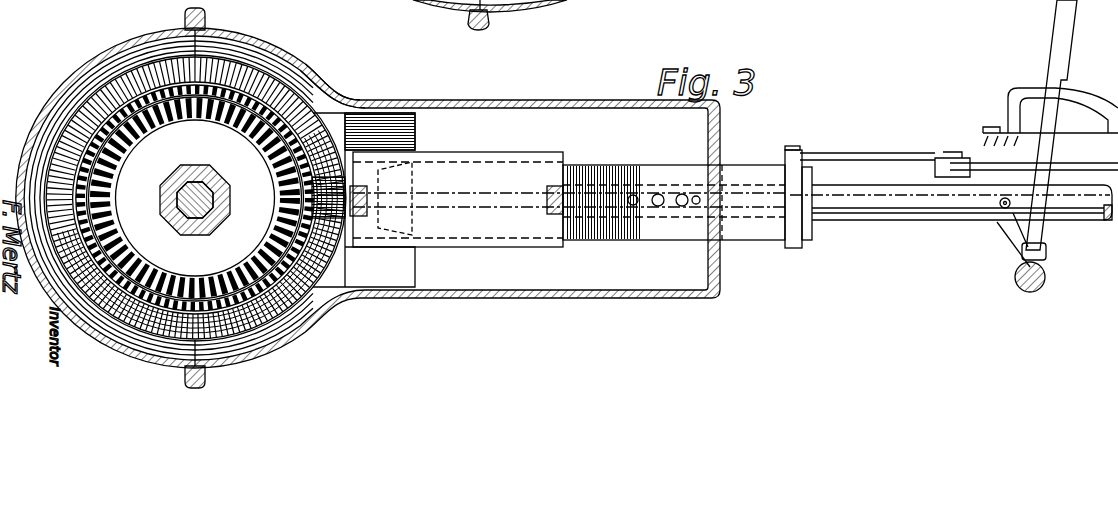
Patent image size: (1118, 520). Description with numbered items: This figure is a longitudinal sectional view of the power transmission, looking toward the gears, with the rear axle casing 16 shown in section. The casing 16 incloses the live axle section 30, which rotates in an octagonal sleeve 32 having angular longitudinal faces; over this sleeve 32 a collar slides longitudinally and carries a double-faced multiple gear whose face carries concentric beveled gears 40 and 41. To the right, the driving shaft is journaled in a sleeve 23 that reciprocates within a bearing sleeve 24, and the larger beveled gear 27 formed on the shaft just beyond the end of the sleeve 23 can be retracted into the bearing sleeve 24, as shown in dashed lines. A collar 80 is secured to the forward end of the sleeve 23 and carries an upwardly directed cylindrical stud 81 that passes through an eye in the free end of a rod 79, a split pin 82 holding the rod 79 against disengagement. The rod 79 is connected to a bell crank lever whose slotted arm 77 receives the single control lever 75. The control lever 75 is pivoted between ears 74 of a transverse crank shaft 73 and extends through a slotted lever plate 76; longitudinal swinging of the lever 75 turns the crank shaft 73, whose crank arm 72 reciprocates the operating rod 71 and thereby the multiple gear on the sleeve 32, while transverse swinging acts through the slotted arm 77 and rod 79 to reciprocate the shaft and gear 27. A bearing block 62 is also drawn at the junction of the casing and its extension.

The rear axle casing 16 is at (50, 97).
The beveled gear 40 is at (300, 79).
The beveled gear 41 is at (219, 119).
The sleeve 32 is at (222, 179).
The axle section 30 is at (213, 201).
The bearing block 62 is at (335, 266).
The beveled gear 27 is at (407, 172).
The bearing sleeve 24 is at (545, 160).
The sleeve 23 is at (765, 232).
The collar 80 is at (797, 241).
The cylindrical stud 81 is at (791, 151).
The split pin 82 is at (806, 152).
The rod 79 is at (897, 162).
The slotted arm 77 is at (1106, 140).
The ears 74 is at (908, 210).
The crank arm 72 is at (1012, 228).
The operating rod 71 is at (1044, 253).
The crank shaft 73 is at (1044, 282).
The control lever 75 is at (1056, 51).
The slotted lever plate 76 is at (1082, 100).